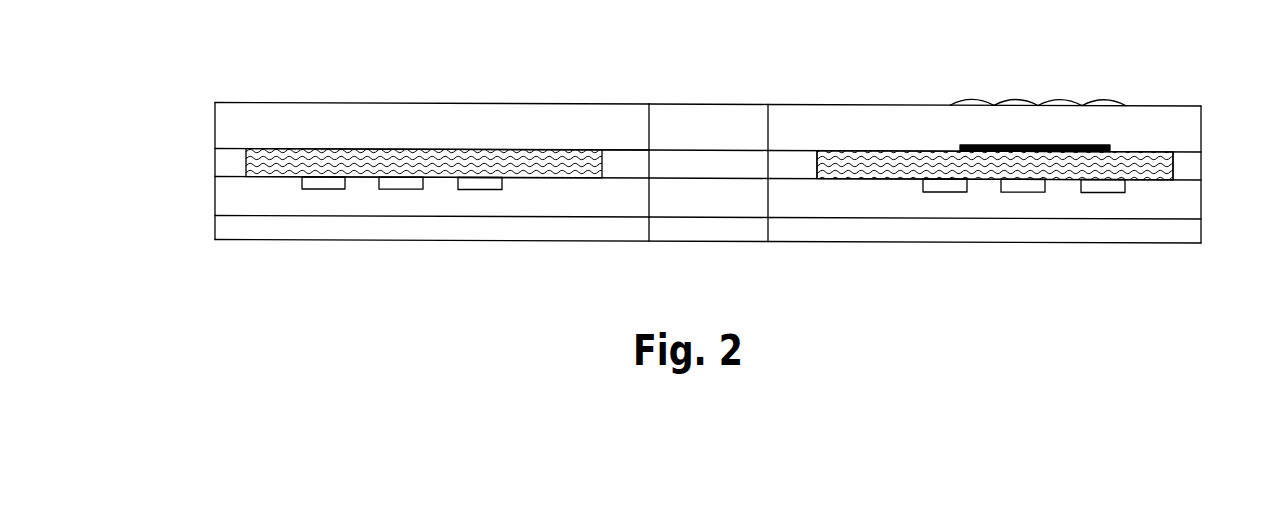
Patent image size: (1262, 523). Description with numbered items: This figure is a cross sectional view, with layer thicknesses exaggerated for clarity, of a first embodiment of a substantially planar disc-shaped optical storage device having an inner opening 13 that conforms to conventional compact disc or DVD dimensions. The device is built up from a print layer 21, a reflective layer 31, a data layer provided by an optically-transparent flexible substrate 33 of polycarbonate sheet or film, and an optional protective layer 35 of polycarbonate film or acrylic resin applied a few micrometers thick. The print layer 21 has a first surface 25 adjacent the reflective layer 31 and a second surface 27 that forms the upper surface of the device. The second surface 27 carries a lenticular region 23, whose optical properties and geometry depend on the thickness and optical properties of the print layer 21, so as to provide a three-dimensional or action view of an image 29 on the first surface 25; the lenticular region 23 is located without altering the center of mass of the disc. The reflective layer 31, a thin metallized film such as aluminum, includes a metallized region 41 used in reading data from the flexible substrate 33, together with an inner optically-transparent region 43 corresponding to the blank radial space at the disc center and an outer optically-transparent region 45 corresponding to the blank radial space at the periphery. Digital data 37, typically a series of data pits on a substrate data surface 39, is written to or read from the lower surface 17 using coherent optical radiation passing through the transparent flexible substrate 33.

The inner opening 13 is at (703, 232).
The lower surface 17 is at (930, 243).
The print layer 21 is at (223, 123).
The lenticular region 23 is at (1060, 98).
The first surface 25 is at (1186, 155).
The second surface 27 is at (1173, 106).
The image 29 is at (961, 145).
The reflective layer 31 is at (223, 163).
The flexible substrate 33 is at (225, 199).
The protective layer 35 is at (225, 228).
The digital data 37 is at (1113, 193).
The substrate data surface 39 is at (1186, 178).
The metallized region 41 is at (840, 148).
The inner optically-transparent region 43 is at (621, 147).
The outer optically-transparent region 45 is at (234, 149).